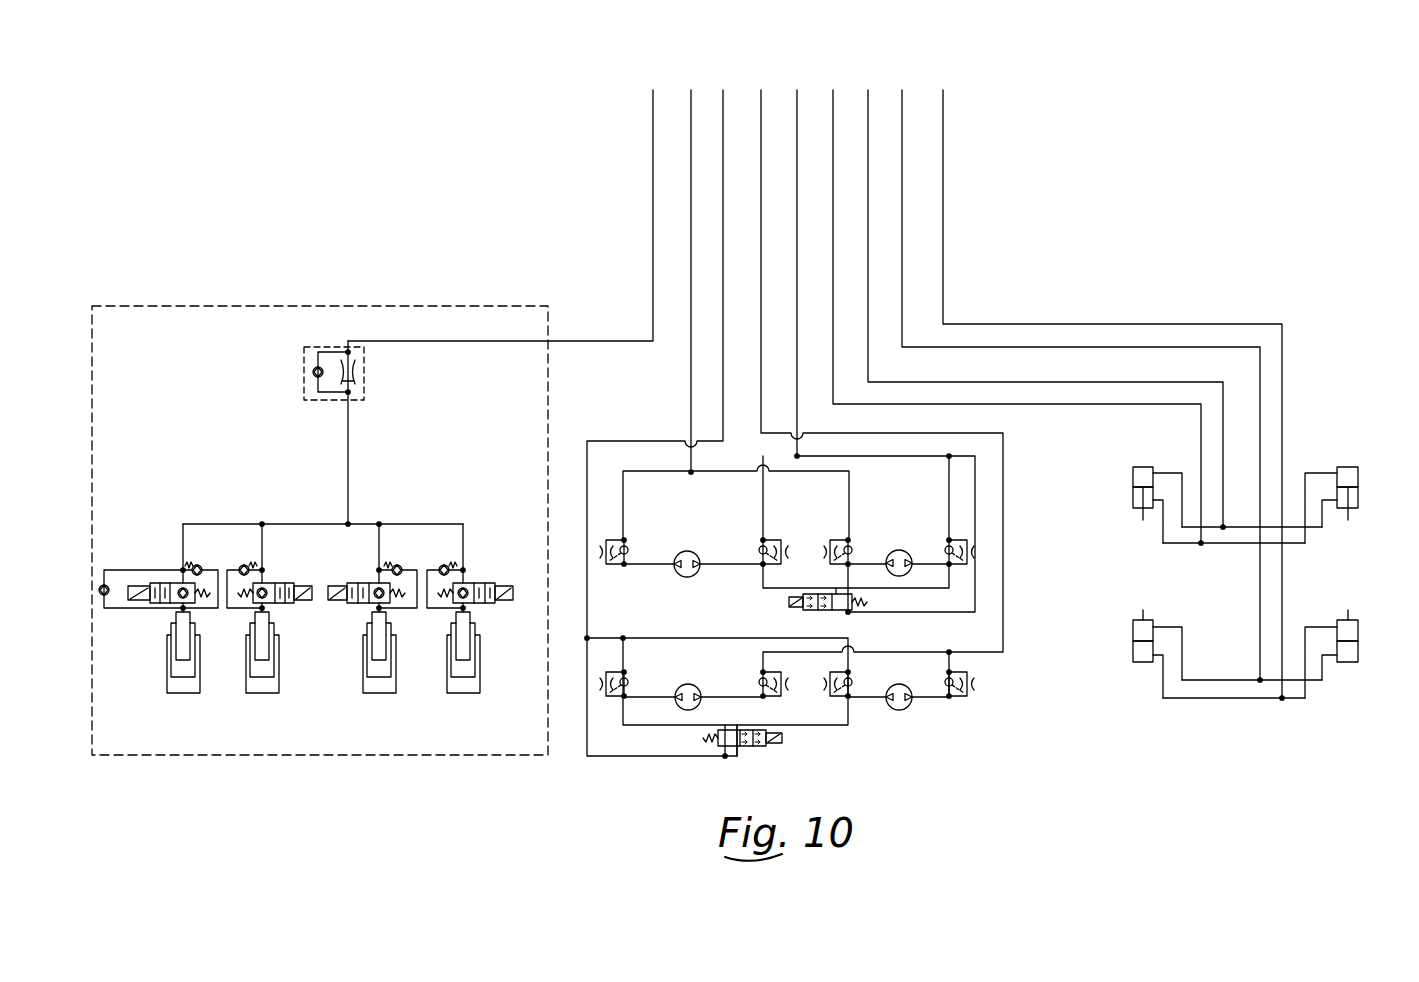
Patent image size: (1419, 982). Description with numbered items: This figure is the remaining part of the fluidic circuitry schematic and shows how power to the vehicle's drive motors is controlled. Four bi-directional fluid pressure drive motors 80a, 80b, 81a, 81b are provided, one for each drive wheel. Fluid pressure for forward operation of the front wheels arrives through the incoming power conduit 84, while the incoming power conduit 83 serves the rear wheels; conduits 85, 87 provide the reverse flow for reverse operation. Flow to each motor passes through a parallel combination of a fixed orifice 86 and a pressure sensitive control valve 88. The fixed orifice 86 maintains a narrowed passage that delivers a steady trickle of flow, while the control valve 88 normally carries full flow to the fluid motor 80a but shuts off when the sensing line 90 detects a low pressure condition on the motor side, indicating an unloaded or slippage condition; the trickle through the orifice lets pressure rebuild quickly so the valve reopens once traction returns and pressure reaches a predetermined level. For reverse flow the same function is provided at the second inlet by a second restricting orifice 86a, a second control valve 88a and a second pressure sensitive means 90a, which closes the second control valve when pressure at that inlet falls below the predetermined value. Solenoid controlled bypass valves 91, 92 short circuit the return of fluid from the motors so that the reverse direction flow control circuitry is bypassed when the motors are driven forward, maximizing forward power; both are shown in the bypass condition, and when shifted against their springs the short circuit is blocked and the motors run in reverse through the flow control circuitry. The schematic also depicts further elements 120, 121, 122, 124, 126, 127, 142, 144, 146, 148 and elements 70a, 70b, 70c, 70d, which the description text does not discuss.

The hydraulic supply line 121 is at (653, 103).
The incoming power conduit 84 is at (691, 103).
The incoming power conduit 83 is at (723, 103).
The conduit 87 is at (761, 103).
The conduit 85 is at (797, 103).
The hydraulic line to cylinders 142 is at (833, 103).
The hydraulic line to cylinders 144 is at (868, 103).
The hydraulic line to cylinders 146 is at (902, 103).
The hydraulic line to cylinders 148 is at (943, 103).
The valve control unit 120 is at (344, 756).
The check valve 124 is at (312, 372).
The orifice 122 is at (355, 368).
The solenoid valve 127 is at (167, 583).
The relief valve 126 is at (198, 565).
The fixed orifice 86 is at (606, 546).
The pressure sensitive control valve 88 is at (627, 549).
The sensing line 90 is at (608, 566).
The fluid pressure drive motor 80a is at (699, 560).
The second control valve 88a is at (758, 550).
The second restricting orifice 86a is at (805, 540).
The second pressure sensitive means 90a is at (777, 566).
The fluid pressure drive motor 80b is at (906, 559).
The solenoid controlled bypass valve 91 is at (789, 602).
The fluid pressure drive motor 81a is at (699, 694).
The fluid pressure drive motor 81b is at (928, 678).
The solenoid controlled bypass valve 92 is at (782, 740).
The hydraulic cylinder 70a is at (1133, 483).
The hydraulic cylinder 70b is at (1360, 481).
The hydraulic cylinder 70c is at (1133, 650).
The hydraulic cylinder 70d is at (1360, 650).